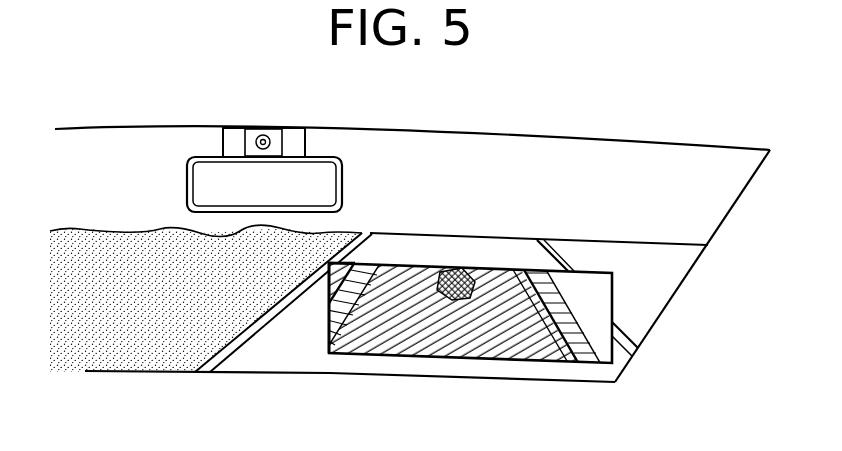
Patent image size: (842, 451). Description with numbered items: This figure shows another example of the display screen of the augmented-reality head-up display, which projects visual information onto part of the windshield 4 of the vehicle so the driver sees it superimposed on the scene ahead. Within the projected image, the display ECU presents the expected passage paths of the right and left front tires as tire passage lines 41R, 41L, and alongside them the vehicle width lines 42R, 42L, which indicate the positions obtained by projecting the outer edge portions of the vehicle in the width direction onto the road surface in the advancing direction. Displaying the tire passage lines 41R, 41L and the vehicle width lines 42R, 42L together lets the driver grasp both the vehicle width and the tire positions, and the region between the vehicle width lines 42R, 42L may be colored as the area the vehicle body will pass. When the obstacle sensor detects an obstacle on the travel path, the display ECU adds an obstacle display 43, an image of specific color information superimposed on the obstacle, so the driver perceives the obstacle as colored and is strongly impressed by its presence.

The windshield 4 is at (458, 128).
The obstacle display 43 is at (455, 268).
The right vehicle width line 42R is at (328, 282).
The right tire passage line 41R is at (355, 322).
The left tire passage line 41L is at (562, 334).
The left vehicle width line 42L is at (583, 346).